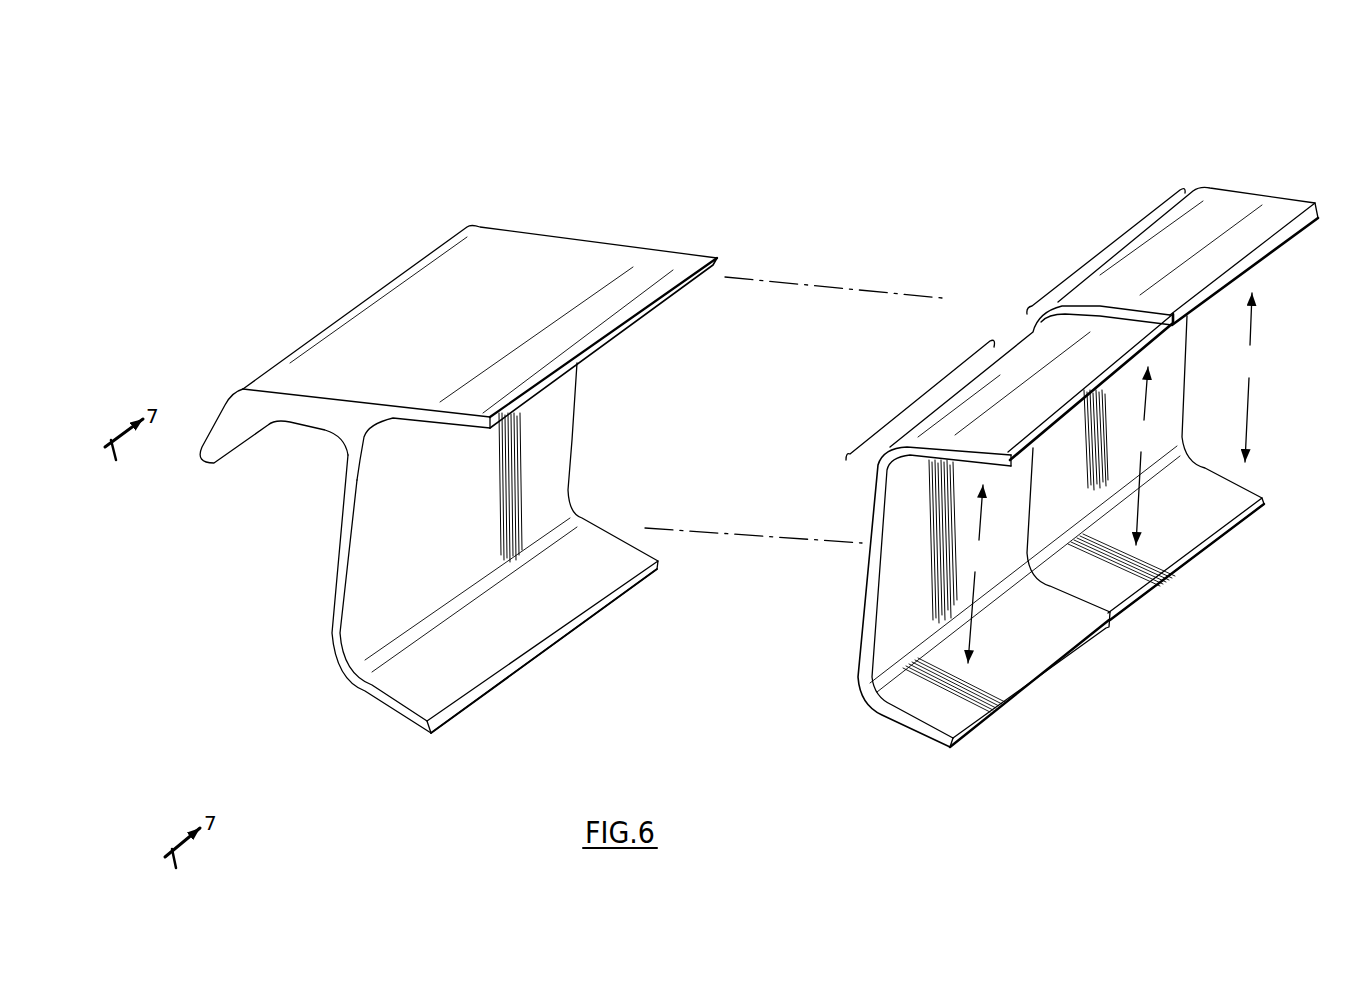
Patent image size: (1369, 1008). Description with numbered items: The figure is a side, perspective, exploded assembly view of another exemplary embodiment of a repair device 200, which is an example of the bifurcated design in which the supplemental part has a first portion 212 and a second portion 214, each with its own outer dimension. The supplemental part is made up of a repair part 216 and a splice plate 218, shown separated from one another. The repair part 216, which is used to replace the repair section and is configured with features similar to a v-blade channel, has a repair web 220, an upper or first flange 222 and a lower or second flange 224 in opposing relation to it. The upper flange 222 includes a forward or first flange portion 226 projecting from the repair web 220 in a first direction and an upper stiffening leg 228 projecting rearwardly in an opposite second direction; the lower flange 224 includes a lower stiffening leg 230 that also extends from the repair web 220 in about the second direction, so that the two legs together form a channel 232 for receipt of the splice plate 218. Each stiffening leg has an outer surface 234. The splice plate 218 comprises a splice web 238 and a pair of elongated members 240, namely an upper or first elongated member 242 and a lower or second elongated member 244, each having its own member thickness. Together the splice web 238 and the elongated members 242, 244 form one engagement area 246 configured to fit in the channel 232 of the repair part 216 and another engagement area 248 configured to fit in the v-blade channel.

The repair device 200 is at (389, 159).
The first portion 212 is at (510, 155).
The second portion 214 is at (1080, 170).
The repair part 216 is at (985, 268).
The splice plate 218 is at (1103, 595).
The repair web 220 is at (330, 590).
The upper flange 222 is at (692, 238).
The lower flange 224 is at (458, 755).
The first flange portion 226 is at (250, 372).
The upper stiffening leg 228 is at (507, 268).
The lower stiffening leg 230 is at (487, 707).
The channel 232 is at (633, 410).
The outer surface 234 is at (650, 258).
The splice web 238 is at (850, 592).
The elongated members 240 is at (1287, 270).
The upper elongated member 242 is at (1249, 198).
The lower elongated member 244 is at (1268, 499).
The engagement area 246 is at (927, 385).
The engagement area 248 is at (1110, 240).